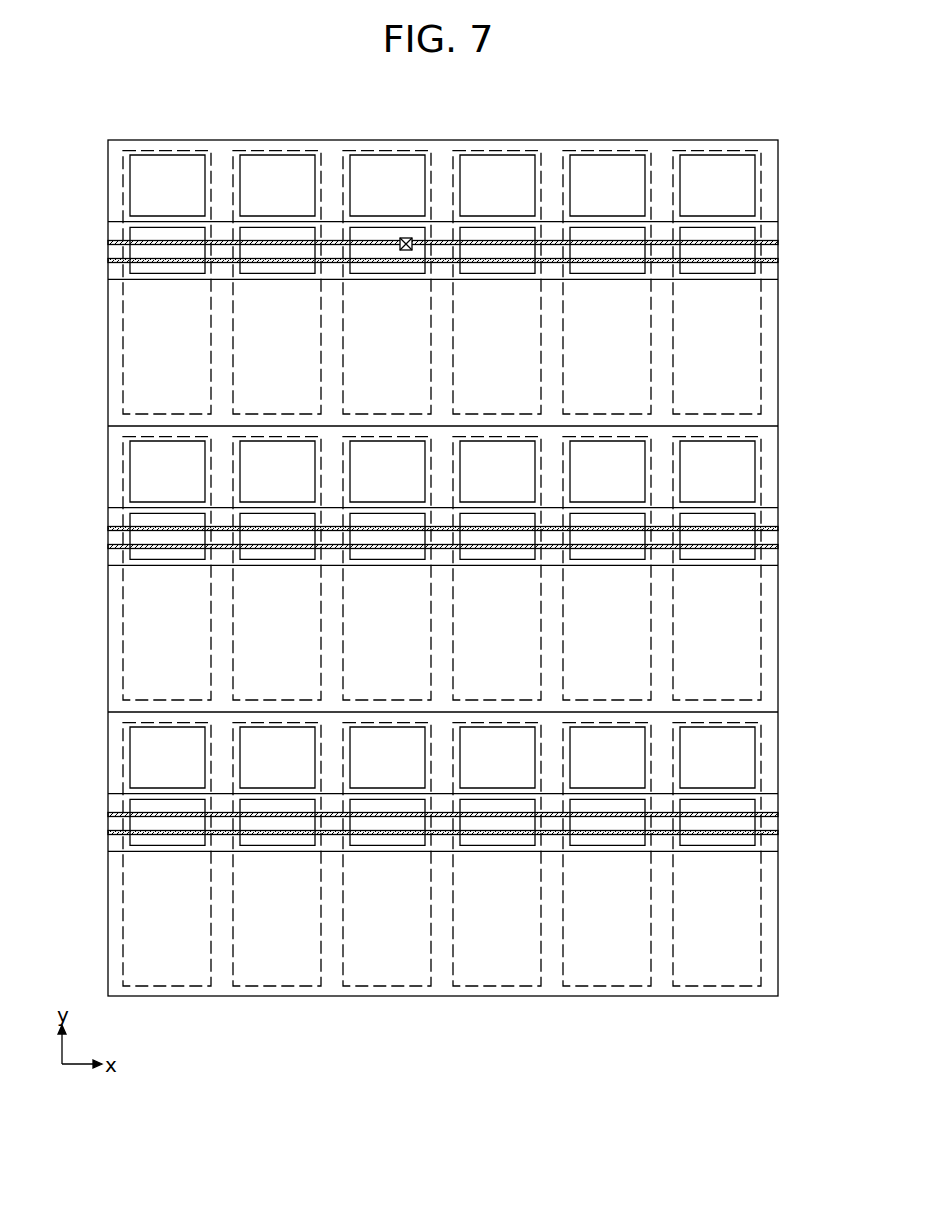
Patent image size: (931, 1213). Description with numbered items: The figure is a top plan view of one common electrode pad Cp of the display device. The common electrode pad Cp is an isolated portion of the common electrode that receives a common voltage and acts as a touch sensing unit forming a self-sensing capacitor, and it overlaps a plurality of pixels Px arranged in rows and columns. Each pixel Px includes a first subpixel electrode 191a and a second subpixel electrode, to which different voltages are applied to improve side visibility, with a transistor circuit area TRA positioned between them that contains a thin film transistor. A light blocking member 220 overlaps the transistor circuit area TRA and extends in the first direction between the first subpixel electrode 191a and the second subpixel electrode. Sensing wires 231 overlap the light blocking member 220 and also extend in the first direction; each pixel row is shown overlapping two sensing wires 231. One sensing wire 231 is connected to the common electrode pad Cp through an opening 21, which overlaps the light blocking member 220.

The common electrode pad Cp is at (778, 163).
The pixel Px is at (122, 724).
The first subpixel electrode 191a is at (129, 758).
The transistor circuit area TRA is at (128, 825).
The light blocking member 220 is at (474, 518).
The sensing wire 231 is at (793, 853).
The opening 21 is at (404, 237).